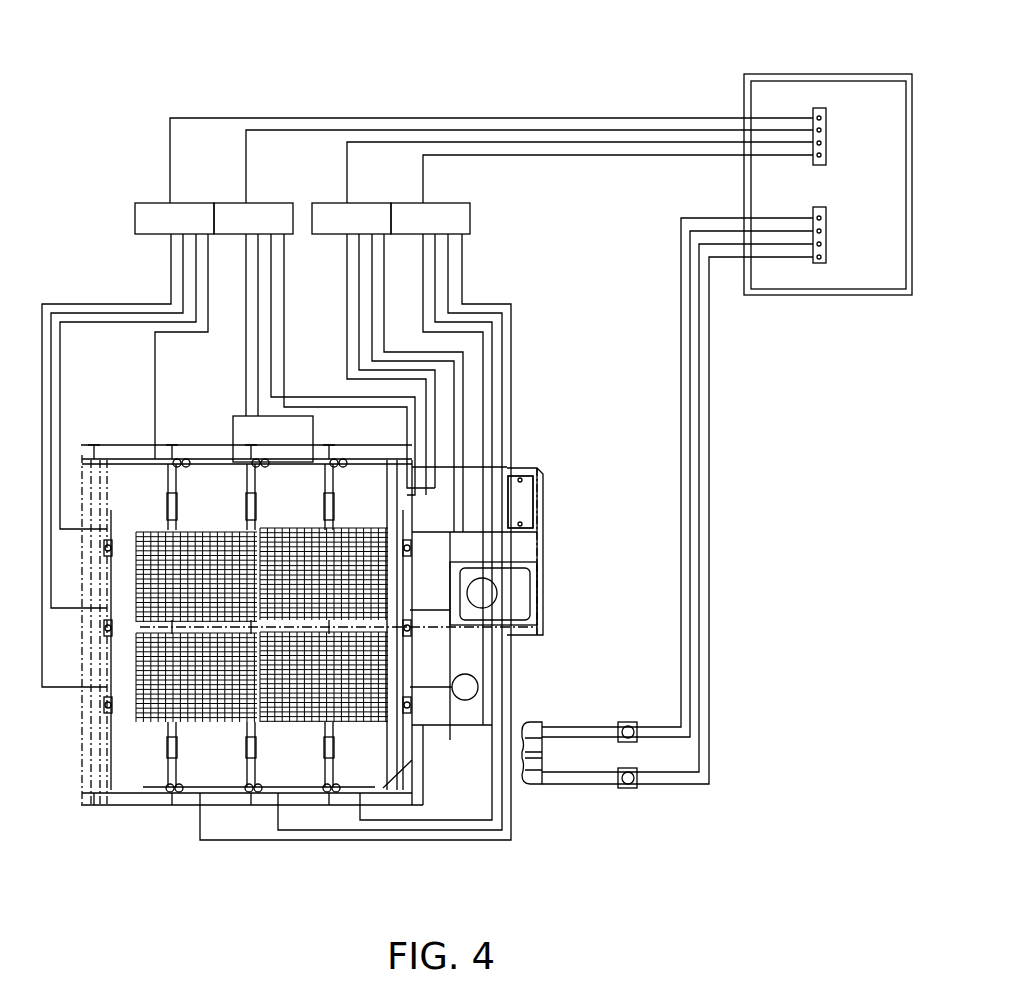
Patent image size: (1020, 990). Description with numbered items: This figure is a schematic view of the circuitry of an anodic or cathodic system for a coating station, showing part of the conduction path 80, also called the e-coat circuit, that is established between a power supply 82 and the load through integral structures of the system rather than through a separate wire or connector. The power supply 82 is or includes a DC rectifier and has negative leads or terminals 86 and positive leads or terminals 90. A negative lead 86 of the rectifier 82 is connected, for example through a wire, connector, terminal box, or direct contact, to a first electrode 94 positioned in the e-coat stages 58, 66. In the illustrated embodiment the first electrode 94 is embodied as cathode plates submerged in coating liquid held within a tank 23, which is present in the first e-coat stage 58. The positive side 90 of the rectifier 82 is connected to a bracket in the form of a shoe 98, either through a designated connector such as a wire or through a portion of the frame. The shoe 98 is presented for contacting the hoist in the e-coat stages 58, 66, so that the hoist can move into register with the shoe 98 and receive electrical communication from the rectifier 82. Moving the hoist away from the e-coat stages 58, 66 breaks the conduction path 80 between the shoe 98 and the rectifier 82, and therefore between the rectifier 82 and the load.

The tank 23 is at (157, 790).
The first e-coat stage 58 is at (528, 494).
The e-coat stage 66 is at (528, 494).
The conduction path 80 is at (742, 696).
The power supply 82 is at (877, 262).
The negative leads 86 is at (826, 143).
The positive leads 90 is at (826, 244).
The first electrode 94 is at (158, 683).
The shoe 98 is at (518, 783).